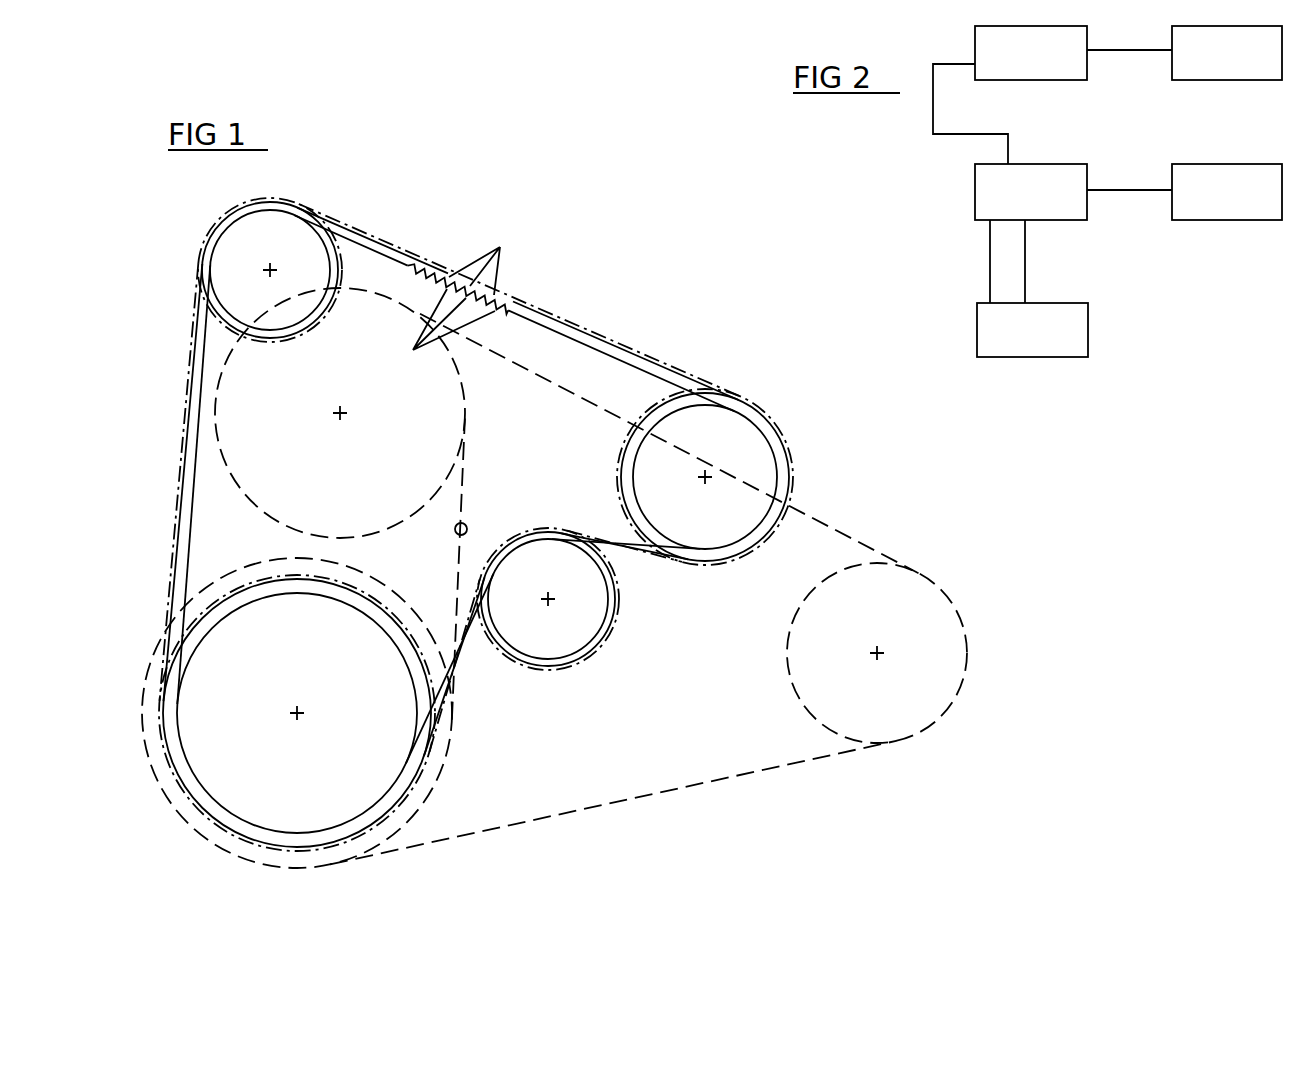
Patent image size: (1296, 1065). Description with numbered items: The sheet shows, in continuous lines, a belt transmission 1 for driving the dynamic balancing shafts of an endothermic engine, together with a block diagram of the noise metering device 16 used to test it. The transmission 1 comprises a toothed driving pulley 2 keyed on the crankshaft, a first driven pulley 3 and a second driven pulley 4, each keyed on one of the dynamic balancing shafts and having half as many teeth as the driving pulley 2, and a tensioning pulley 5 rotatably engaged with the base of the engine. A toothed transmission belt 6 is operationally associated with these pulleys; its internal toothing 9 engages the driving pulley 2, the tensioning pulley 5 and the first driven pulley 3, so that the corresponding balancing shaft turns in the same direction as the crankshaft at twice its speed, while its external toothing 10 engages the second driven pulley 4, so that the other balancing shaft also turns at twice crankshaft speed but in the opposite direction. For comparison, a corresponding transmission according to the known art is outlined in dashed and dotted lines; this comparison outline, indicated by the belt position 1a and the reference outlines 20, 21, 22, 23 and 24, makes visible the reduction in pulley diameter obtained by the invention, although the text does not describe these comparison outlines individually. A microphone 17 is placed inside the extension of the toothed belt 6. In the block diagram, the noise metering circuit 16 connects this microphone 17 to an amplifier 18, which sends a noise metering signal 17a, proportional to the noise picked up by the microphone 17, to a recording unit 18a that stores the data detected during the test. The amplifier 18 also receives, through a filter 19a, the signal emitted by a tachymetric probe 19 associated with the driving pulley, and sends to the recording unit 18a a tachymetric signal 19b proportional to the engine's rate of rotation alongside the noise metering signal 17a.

In FIG. 1, the belt transmission 1 is at (265, 338).
In FIG. 1, the belt in alternative position 1a is at (469, 604).
In FIG. 1, the toothed driving pulley 2 is at (186, 753).
In FIG. 1, the first driven pulley 3 is at (292, 328).
In FIG. 1, the second driven pulley 4 is at (584, 650).
In FIG. 1, the tensioning pulley 5 is at (636, 520).
In FIG. 1, the toothed transmission belt 6 is at (597, 337).
In FIG. 1, the internal toothing 9 is at (441, 334).
In FIG. 1, the external toothing 10 is at (496, 254).
In FIG. 2, the noise metering device 16 is at (1146, 277).
In FIG. 1, the microphone 17 is at (470, 523).
In FIG. 2, the microphone 17 is at (1227, 192).
In FIG. 2, the noise metering signal 17a is at (1026, 268).
In FIG. 2, the amplifier 18 is at (1031, 192).
In FIG. 2, the recording unit 18a is at (1032, 330).
In FIG. 2, the tachymetric probe 19 is at (1227, 53).
In FIG. 2, the filter 19a is at (1031, 53).
In FIG. 2, the tachymetric signal 19b is at (990, 256).
In FIG. 1, the alternative belt run 20 is at (853, 560).
In FIG. 1, the alternative pulley position 21 is at (437, 792).
In FIG. 1, the alternative pulley position 22 is at (465, 448).
In FIG. 1, the alternative pulley position 23 is at (967, 642).
In FIG. 1, the alternative belt run 24 is at (740, 779).